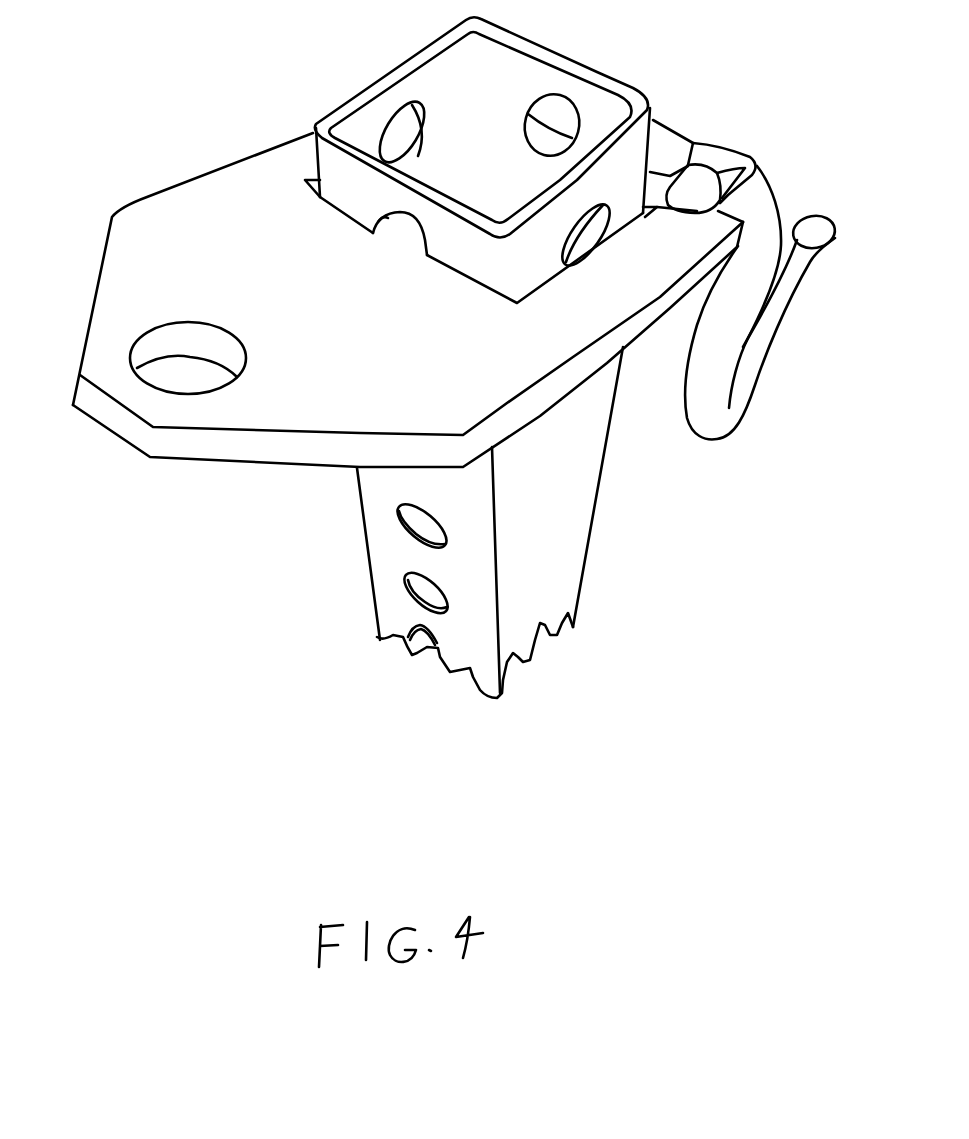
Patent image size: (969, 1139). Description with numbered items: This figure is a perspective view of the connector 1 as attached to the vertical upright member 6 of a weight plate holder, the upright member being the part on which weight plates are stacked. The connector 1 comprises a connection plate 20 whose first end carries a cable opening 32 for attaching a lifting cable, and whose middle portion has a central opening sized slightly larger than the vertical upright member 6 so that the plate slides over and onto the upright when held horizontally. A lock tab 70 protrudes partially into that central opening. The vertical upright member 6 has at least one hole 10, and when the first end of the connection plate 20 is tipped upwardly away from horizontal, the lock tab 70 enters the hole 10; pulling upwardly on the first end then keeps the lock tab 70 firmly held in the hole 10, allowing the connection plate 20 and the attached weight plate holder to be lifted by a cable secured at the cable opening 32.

The connector 1 is at (147, 199).
The hole 10 is at (373, 233).
The connection plate 20 is at (517, 357).
The cable opening 32 is at (188, 360).
The vertical upright member 6 is at (563, 535).
The lock tab 70 is at (417, 237).